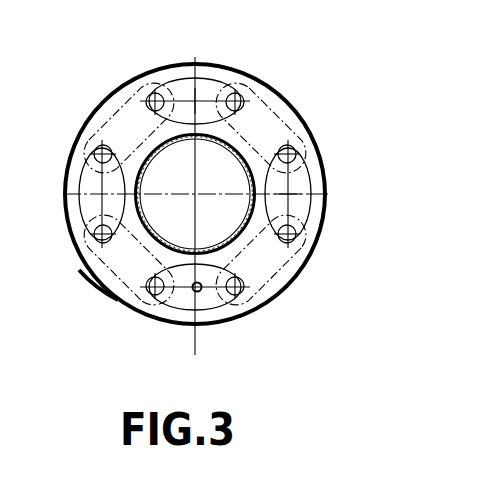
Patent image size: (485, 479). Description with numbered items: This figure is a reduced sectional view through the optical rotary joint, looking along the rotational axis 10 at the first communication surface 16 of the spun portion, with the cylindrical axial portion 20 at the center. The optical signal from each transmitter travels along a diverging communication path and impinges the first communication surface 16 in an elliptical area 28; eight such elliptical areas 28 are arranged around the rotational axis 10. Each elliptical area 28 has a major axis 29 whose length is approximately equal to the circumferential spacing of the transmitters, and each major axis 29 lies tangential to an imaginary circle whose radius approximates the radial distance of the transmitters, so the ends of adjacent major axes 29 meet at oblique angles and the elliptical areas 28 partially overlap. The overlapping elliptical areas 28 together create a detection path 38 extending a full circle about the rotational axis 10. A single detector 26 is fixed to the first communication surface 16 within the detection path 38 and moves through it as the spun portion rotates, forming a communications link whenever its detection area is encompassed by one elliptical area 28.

The rotational axis 10 is at (198, 192).
The first communication surface 16 is at (182, 326).
The axial portion 20 is at (98, 151).
The detector 26 is at (200, 291).
The elliptical area 28 is at (173, 80).
The major axis 29 is at (198, 100).
The detection path 38 is at (92, 287).